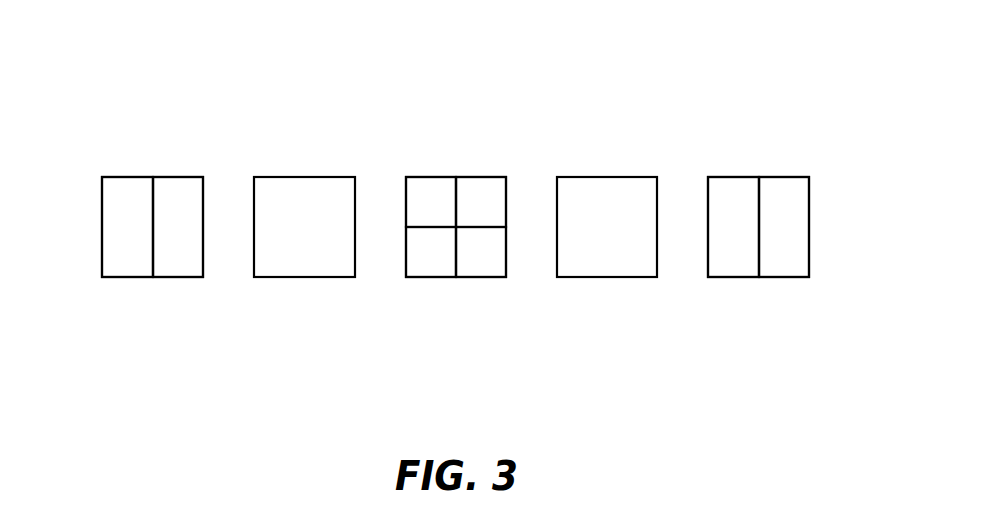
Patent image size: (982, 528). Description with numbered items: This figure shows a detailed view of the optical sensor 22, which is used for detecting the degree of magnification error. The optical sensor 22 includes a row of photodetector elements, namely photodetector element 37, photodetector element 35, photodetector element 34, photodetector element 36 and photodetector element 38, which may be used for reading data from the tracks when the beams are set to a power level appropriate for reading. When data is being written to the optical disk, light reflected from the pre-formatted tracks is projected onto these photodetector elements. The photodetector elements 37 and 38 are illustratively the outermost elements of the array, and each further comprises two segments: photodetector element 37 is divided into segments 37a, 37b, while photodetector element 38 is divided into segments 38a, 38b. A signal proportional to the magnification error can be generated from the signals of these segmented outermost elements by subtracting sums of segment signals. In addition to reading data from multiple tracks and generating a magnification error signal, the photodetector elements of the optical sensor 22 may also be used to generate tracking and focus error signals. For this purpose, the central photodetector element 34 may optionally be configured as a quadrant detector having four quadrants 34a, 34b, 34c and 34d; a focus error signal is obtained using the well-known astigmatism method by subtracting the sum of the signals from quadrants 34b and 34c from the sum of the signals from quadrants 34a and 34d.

The optical sensor 22 is at (764, 41).
The photodetector element 34 is at (456, 159).
The quadrant of photodetector element 34a is at (430, 193).
The quadrant of photodetector element 34b is at (480, 193).
The quadrant of photodetector element 34c is at (440, 262).
The quadrant of photodetector element 34d is at (480, 262).
The photodetector element 35 is at (320, 280).
The photodetector element 36 is at (598, 278).
The photodetector element 37 is at (152, 159).
The segment of photodetector element 37a is at (118, 268).
The segment of photodetector element 37b is at (178, 268).
The photodetector element 38 is at (759, 159).
The segment of photodetector element 38a is at (743, 268).
The segment of photodetector element 38b is at (793, 268).